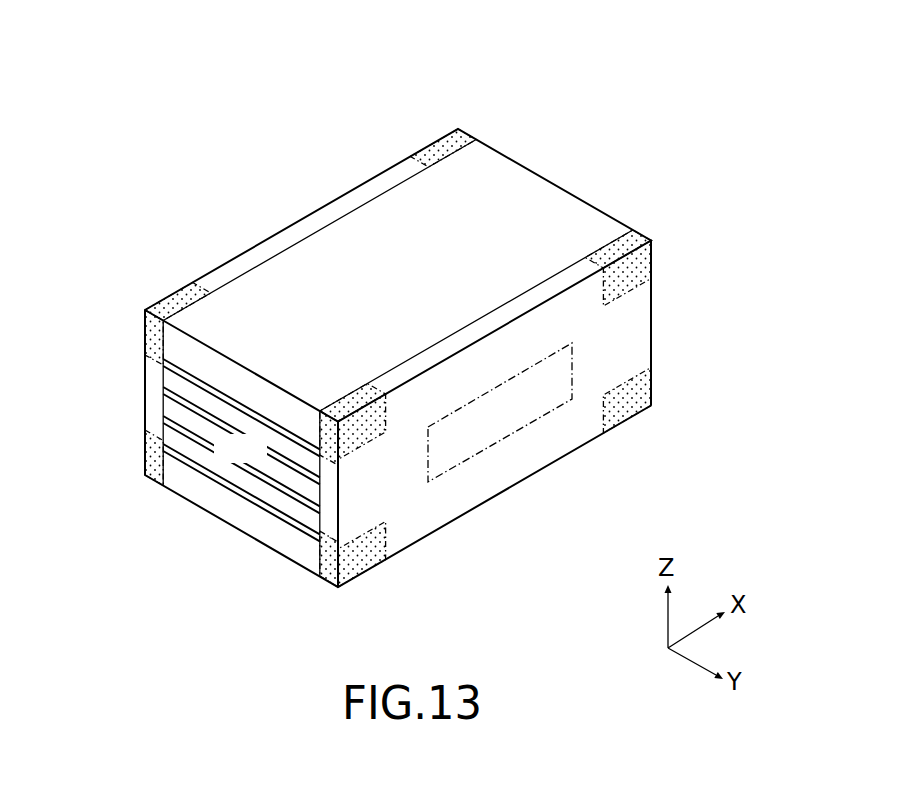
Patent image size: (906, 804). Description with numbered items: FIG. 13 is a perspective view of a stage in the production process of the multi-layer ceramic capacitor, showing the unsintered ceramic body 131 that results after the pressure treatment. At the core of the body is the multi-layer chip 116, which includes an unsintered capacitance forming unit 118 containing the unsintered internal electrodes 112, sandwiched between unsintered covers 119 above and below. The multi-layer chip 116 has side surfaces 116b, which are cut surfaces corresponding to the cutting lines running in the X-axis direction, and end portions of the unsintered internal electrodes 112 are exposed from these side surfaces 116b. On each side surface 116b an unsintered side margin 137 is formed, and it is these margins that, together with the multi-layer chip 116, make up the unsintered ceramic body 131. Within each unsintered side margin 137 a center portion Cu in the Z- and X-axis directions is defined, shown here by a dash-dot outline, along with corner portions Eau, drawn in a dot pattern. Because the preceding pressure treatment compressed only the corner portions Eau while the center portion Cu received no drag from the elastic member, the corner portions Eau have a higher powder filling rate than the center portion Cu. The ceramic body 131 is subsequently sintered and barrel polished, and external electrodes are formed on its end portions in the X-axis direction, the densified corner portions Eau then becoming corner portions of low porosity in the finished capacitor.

The unsintered ceramic body 131 is at (540, 112).
The unsintered side margin 137 is at (318, 200).
The side surface 116b is at (366, 206).
The multi-layer chip 116 is at (260, 257).
The unsintered internal electrode 112 is at (148, 379).
The unsintered capacitance forming unit 118 is at (262, 462).
The unsintered cover 119 is at (258, 395).
The center portion Cu is at (517, 432).
The corner portions Eau is at (437, 136).